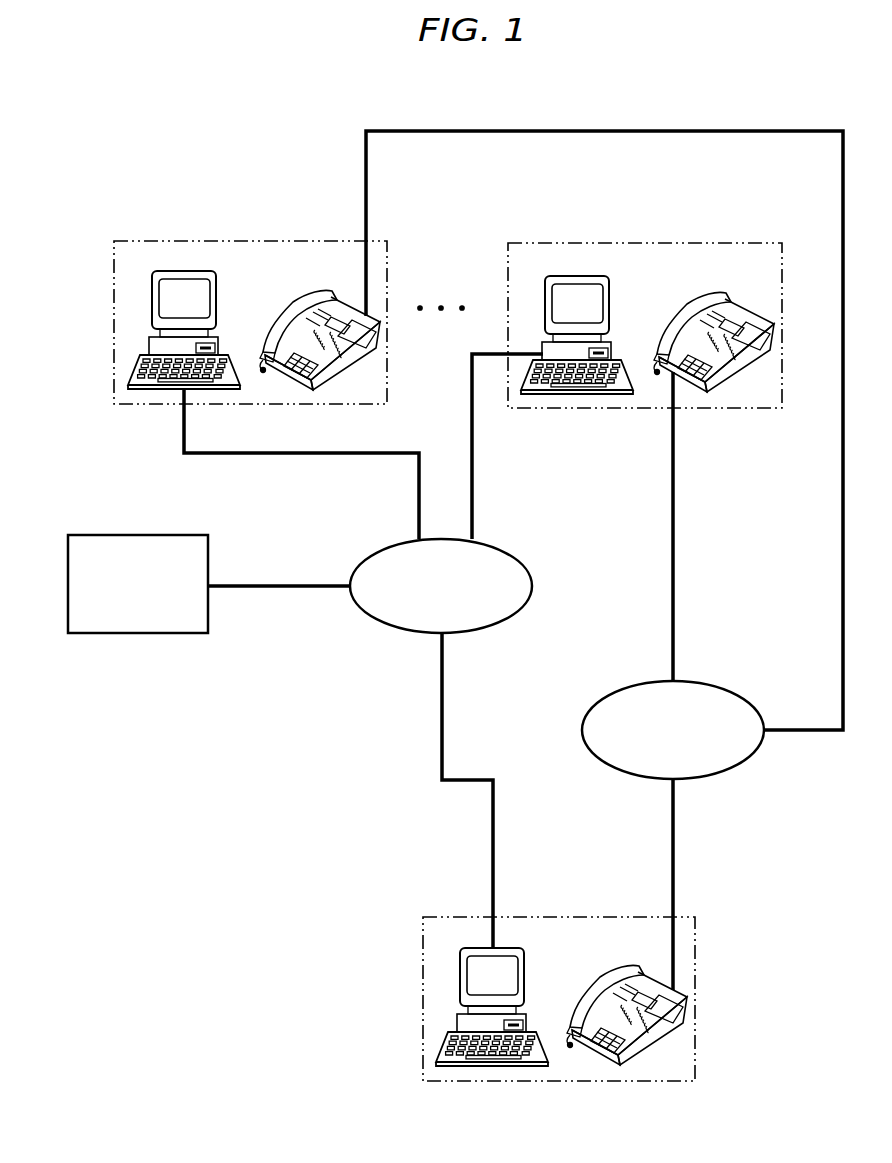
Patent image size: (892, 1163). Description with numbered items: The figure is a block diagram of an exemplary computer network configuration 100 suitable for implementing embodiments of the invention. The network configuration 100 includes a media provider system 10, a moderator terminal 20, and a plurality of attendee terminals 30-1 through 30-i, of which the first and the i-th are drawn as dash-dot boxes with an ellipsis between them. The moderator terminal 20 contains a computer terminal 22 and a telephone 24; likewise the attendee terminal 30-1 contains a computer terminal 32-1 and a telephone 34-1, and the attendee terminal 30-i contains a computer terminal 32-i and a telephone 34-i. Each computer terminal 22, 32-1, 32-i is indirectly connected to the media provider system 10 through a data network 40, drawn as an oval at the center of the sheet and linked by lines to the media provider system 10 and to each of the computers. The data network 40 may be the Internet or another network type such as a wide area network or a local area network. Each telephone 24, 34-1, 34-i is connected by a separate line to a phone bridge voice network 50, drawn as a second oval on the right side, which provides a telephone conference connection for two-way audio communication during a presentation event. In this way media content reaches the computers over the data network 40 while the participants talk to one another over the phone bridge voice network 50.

The computer network configuration 100 is at (333, 92).
The media provider system 10 is at (210, 567).
The moderator terminal 20 is at (423, 957).
The computer terminal 22 is at (510, 948).
The telephone 24 is at (580, 1005).
The attendee terminal 30-1 is at (114, 282).
The computer terminal 32-1 is at (180, 271).
The telephone 34-1 is at (280, 326).
The attendee terminal 30-i is at (508, 262).
The computer terminal 32-i is at (572, 276).
The telephone 34-i is at (676, 318).
The data network 40 is at (353, 610).
The phone bridge voice network 50 is at (592, 752).